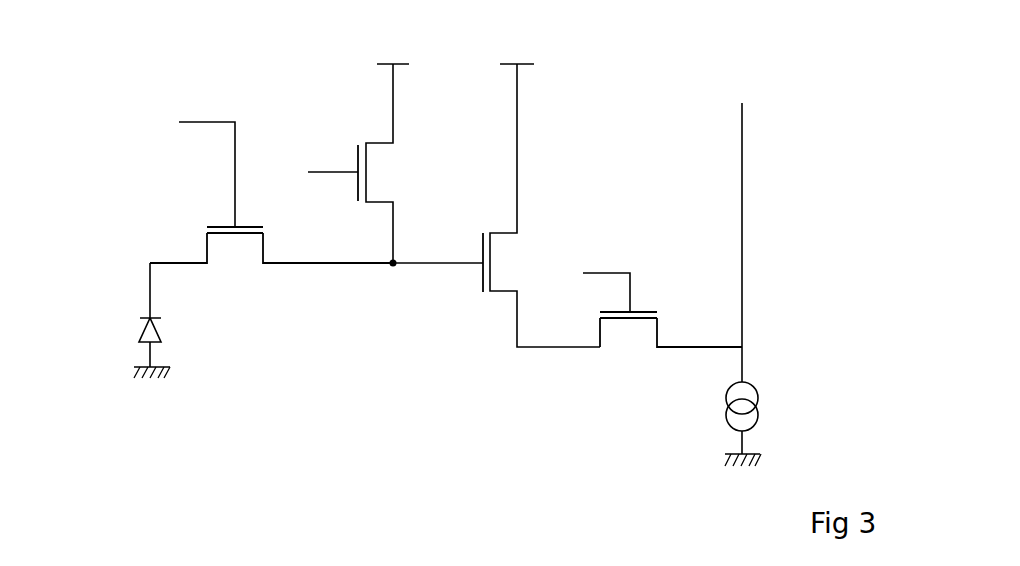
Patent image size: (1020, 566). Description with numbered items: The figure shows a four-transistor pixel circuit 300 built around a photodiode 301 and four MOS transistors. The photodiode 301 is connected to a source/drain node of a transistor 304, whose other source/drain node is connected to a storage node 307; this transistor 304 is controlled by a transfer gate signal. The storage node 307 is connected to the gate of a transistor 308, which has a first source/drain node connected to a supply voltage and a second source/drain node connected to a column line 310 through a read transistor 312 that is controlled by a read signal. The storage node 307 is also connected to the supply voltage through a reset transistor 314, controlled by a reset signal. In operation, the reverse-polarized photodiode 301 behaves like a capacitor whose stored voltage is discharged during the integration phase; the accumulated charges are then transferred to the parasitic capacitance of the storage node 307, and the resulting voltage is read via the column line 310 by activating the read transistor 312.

The pixel circuit 300 is at (131, 71).
The photodiode 301 is at (137, 331).
The transistor 304 is at (232, 245).
The storage node 307 is at (393, 270).
The transistor 308 is at (503, 262).
The column line 310 is at (742, 235).
The read transistor 312 is at (630, 336).
The reset transistor 314 is at (374, 172).